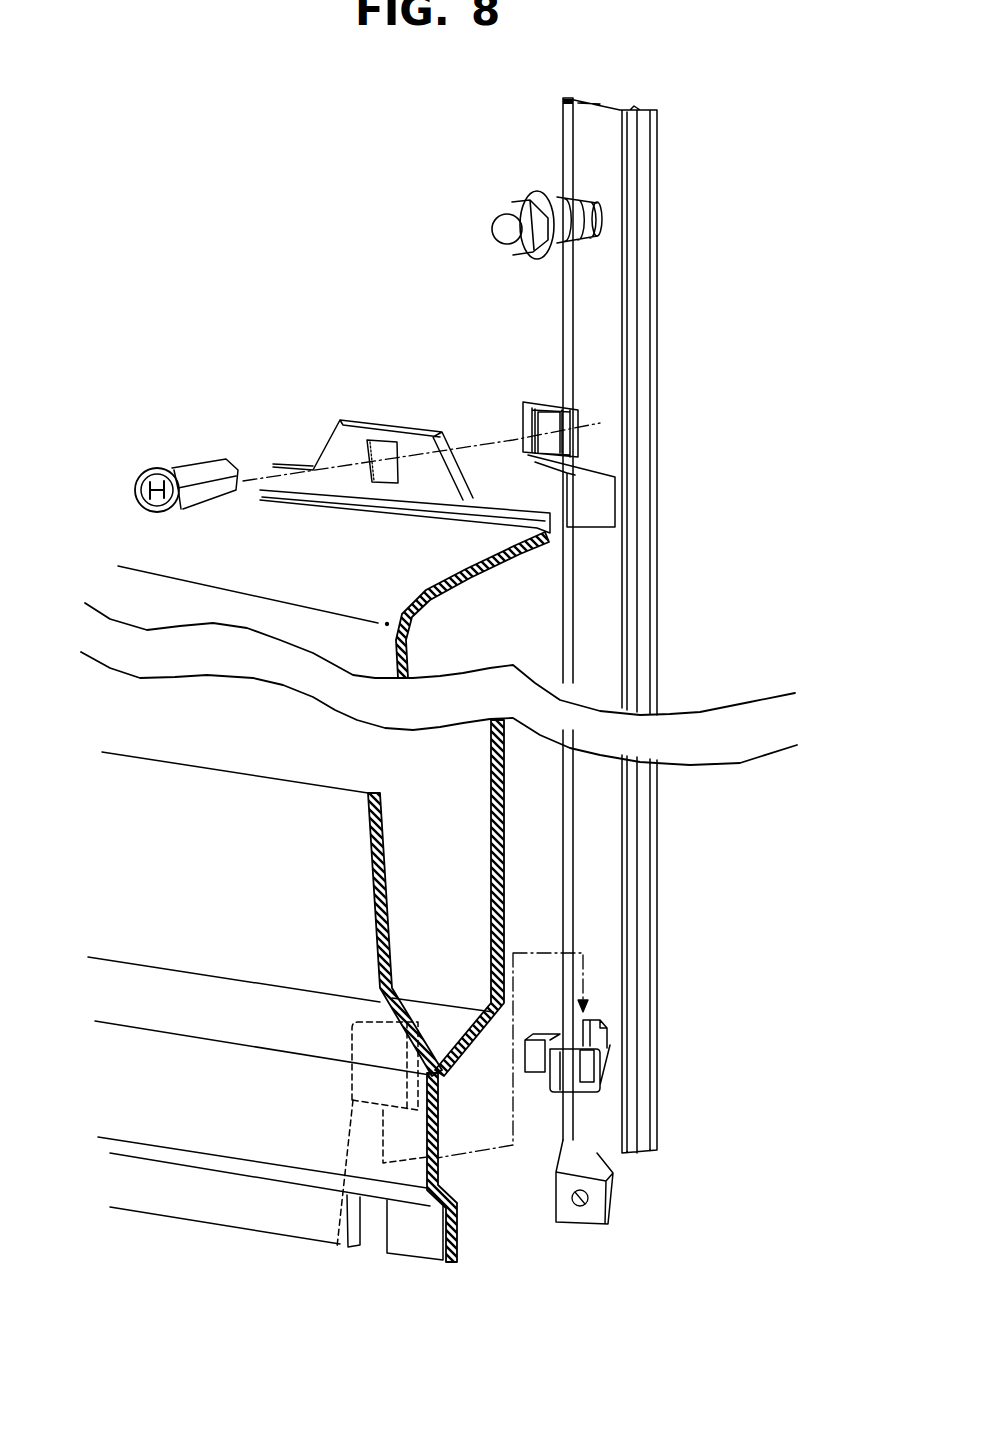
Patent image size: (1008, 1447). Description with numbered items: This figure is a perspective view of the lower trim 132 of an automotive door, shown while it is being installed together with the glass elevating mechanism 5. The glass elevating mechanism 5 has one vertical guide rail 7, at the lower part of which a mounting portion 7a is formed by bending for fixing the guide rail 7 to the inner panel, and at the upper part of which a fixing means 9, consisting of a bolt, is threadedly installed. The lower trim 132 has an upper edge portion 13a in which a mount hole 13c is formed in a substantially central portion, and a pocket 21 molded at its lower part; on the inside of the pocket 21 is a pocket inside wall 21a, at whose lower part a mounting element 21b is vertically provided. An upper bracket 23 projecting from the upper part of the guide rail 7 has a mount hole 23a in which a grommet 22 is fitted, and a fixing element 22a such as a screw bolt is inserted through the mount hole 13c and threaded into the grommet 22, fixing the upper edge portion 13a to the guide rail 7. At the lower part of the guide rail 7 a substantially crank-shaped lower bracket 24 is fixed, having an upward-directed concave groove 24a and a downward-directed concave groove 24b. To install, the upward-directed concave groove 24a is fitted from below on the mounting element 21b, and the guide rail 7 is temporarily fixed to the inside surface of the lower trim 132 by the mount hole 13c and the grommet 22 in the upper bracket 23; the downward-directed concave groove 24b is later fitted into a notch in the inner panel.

The glass elevating mechanism 5 is at (660, 243).
The guide rail 7 is at (600, 886).
The mounting portion 7a is at (600, 1198).
The fixing means 9 is at (502, 230).
The lower trim 132 is at (400, 577).
The upper edge portion 13a is at (332, 453).
The mount hole 13c is at (377, 447).
The pocket 21 is at (437, 868).
The pocket inside wall 21a is at (507, 843).
The mounting element 21b is at (362, 1153).
The grommet 22 is at (210, 488).
The fixing element 22a is at (140, 497).
The upper bracket 23 is at (575, 448).
The mount hole 23a is at (542, 412).
The lower bracket 24 is at (610, 1083).
The upward-directed concave groove 24a is at (587, 1068).
The downward-directed concave groove 24b is at (583, 1047).